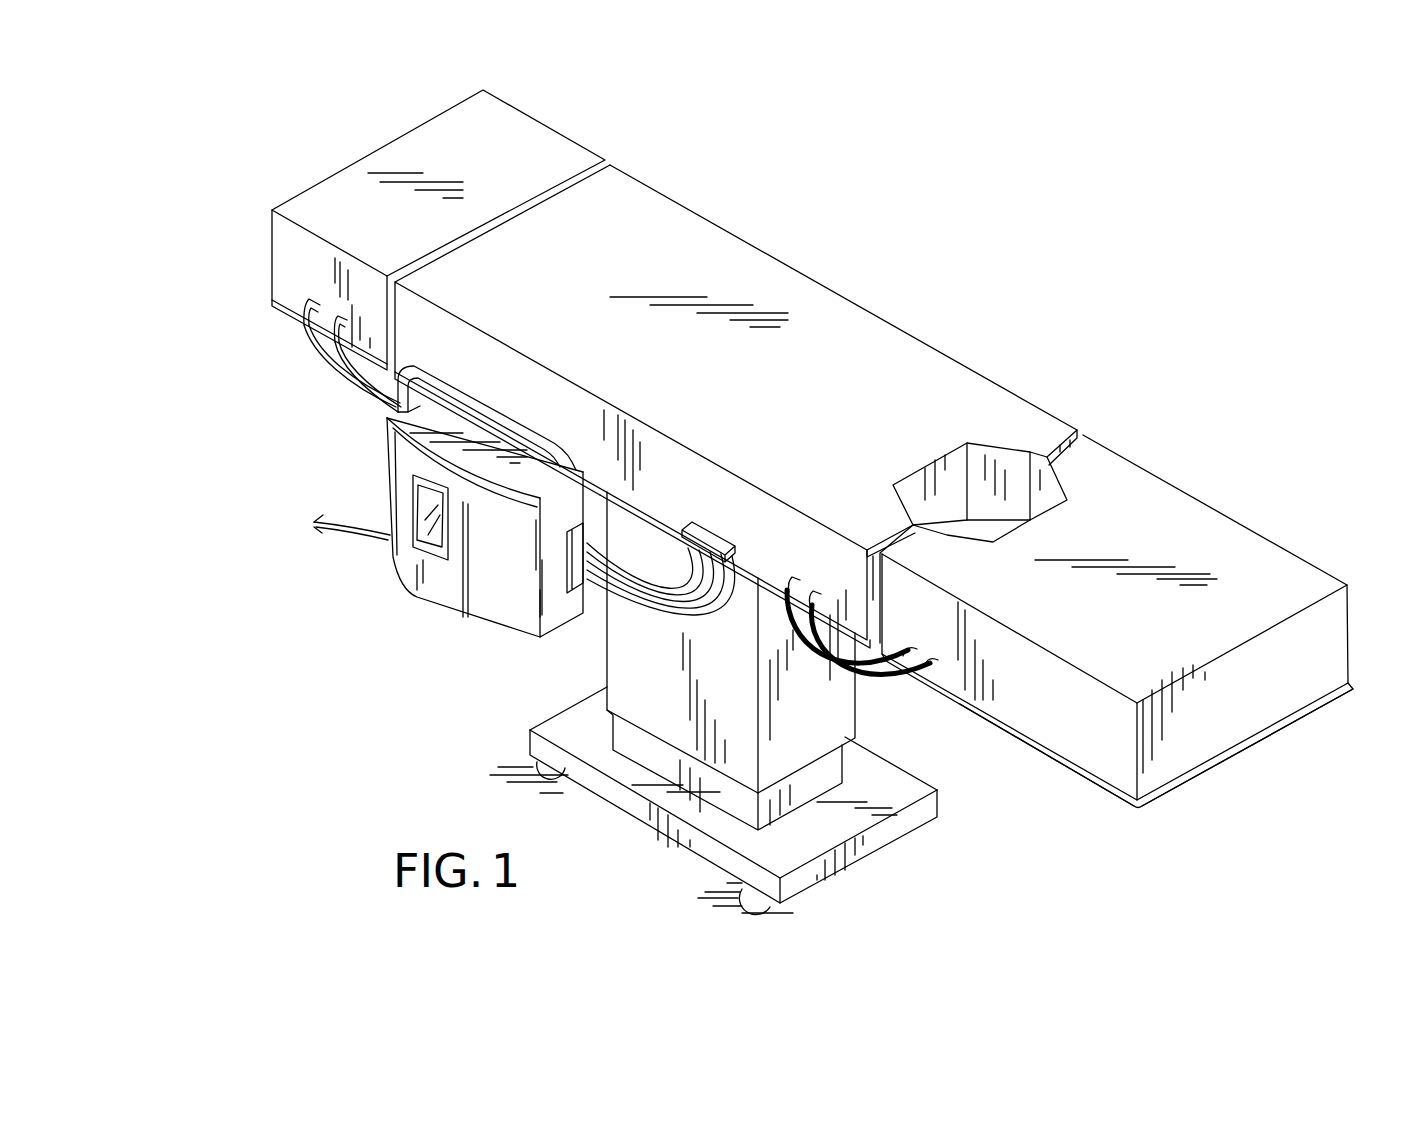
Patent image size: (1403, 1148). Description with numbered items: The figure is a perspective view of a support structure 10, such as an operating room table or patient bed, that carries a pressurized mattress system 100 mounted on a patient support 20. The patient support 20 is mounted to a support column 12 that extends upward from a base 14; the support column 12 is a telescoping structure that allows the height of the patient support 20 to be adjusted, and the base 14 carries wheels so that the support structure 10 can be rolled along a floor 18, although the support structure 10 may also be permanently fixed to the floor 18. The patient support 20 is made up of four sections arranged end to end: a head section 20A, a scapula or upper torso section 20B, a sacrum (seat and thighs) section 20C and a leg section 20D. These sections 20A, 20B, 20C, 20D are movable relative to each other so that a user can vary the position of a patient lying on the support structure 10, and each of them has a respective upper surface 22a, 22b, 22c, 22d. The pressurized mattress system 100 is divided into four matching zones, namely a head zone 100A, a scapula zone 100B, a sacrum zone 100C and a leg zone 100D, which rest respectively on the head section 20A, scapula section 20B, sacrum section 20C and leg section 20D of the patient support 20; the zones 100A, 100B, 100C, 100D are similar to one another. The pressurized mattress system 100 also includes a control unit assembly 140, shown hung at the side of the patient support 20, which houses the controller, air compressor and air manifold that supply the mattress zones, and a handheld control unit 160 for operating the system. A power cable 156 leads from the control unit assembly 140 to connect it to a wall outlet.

The support structure 10 is at (776, 502).
The support column 12 is at (680, 722).
The base 14 is at (842, 830).
The floor 18 is at (510, 767).
The patient support 20 is at (1169, 796).
The head section 20A is at (284, 322).
The scapula section 20B is at (600, 507).
The sacrum section 20C is at (841, 650).
The leg section 20D is at (1050, 768).
The upper surface 22a is at (283, 298).
The upper surface 22b is at (587, 478).
The upper surface 22c is at (747, 573).
The upper surface 22d is at (1025, 738).
The pressurized mattress system 100 is at (776, 486).
The head zone 100A is at (543, 148).
The scapula zone 100B is at (650, 234).
The sacrum zone 100C is at (927, 380).
The leg zone 100D is at (1195, 528).
The control unit assembly 140 is at (443, 527).
The power cable 156 is at (333, 520).
The handheld control unit 160 is at (418, 533).